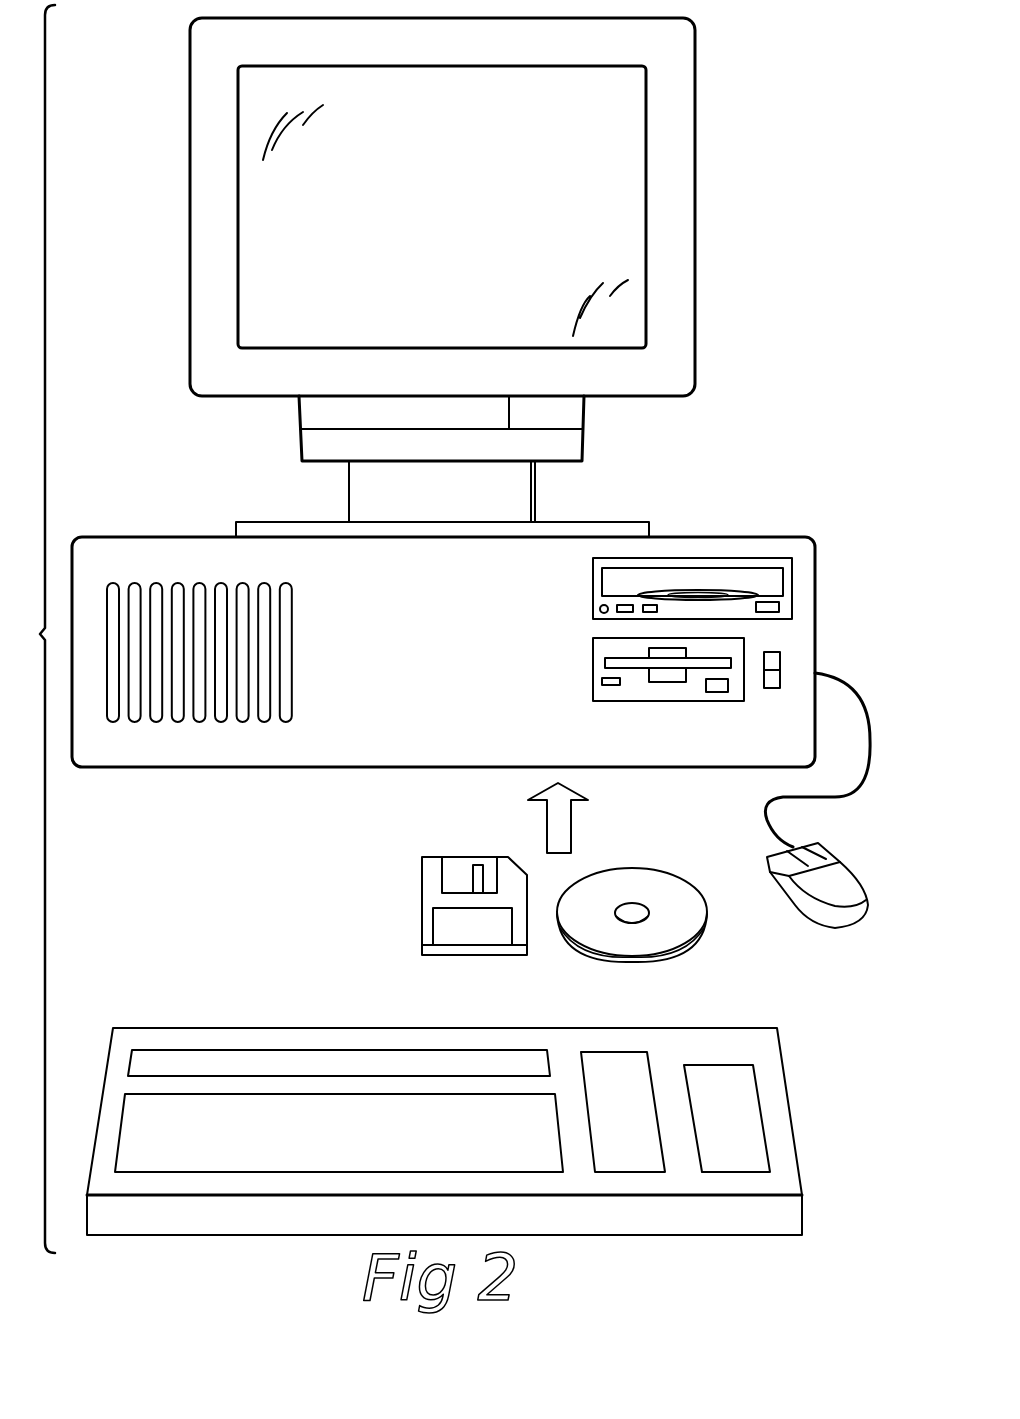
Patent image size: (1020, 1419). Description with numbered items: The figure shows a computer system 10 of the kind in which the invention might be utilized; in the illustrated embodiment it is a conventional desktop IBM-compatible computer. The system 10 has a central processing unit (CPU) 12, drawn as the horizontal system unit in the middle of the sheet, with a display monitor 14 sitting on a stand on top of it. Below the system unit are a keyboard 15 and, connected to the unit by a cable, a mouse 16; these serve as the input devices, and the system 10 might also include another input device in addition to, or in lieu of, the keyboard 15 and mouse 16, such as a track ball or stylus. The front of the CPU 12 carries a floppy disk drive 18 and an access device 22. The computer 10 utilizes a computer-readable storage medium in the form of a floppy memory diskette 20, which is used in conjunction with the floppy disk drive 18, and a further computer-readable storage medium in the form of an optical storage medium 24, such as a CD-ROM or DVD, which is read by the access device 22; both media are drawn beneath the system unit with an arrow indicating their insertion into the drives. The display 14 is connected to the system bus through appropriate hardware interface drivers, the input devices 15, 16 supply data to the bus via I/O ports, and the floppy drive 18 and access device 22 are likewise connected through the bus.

The computer system 10 is at (772, 73).
The central processing unit 12 is at (817, 618).
The display monitor 14 is at (684, 197).
The keyboard 15 is at (220, 1035).
The mouse 16 is at (806, 897).
The floppy disk drive 18 is at (596, 651).
The floppy memory diskette 20 is at (430, 890).
The access device 22 is at (594, 598).
The optical storage medium 24 is at (658, 883).